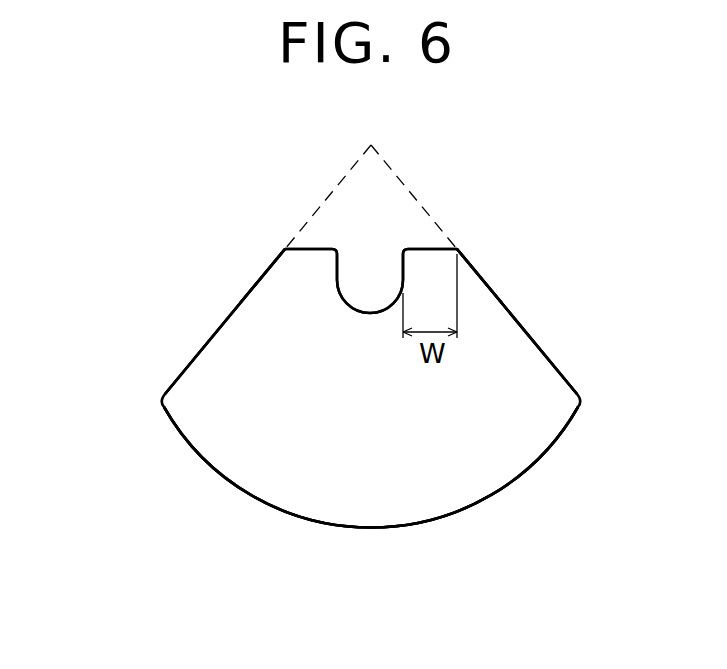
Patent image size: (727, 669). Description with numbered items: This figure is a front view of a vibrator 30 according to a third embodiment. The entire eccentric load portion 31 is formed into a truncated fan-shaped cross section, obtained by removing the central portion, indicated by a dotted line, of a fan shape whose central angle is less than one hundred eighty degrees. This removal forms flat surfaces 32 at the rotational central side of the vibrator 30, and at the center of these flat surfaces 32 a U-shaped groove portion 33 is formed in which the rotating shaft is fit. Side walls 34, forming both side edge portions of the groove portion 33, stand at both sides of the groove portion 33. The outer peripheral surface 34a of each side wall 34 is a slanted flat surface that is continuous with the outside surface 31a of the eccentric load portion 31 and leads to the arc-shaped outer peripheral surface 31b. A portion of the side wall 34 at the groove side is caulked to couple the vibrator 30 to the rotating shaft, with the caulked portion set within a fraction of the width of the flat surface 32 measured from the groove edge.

The vibrator 30 is at (232, 528).
The eccentric load portion 31 is at (499, 470).
The outside surface 31a is at (192, 352).
The arc-shaped outer peripheral surface 31b is at (367, 530).
The flat surfaces 32 is at (313, 248).
The U-shaped groove portion 33 is at (363, 304).
The side walls 34 is at (282, 279).
The outer peripheral surface 34a is at (278, 255).